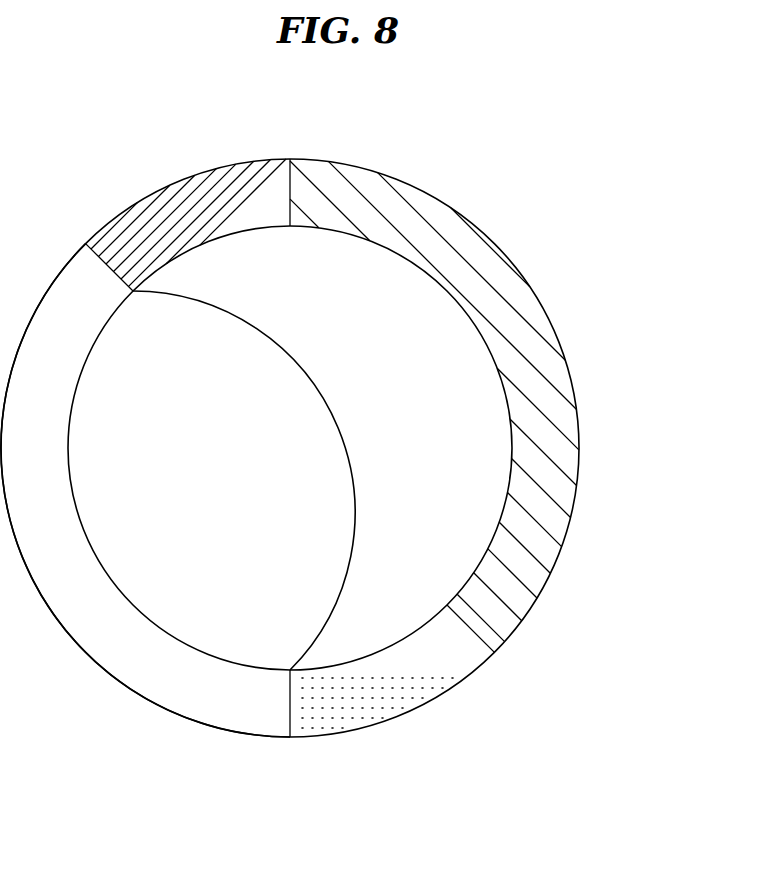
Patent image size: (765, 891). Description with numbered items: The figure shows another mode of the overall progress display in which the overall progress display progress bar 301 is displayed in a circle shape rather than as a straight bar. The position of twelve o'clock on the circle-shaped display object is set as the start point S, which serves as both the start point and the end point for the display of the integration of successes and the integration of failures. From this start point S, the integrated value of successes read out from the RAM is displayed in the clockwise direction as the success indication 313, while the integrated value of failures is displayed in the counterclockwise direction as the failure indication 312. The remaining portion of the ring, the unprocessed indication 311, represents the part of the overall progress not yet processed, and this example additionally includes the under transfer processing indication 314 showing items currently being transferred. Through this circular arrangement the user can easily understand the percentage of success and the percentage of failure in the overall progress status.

The progress bar 301 is at (380, 173).
The unprocessed indication 311 is at (108, 660).
The failure indication 312 is at (143, 212).
The success indication 313 is at (562, 423).
The under transfer processing indication 314 is at (408, 695).
The start point S is at (290, 159).